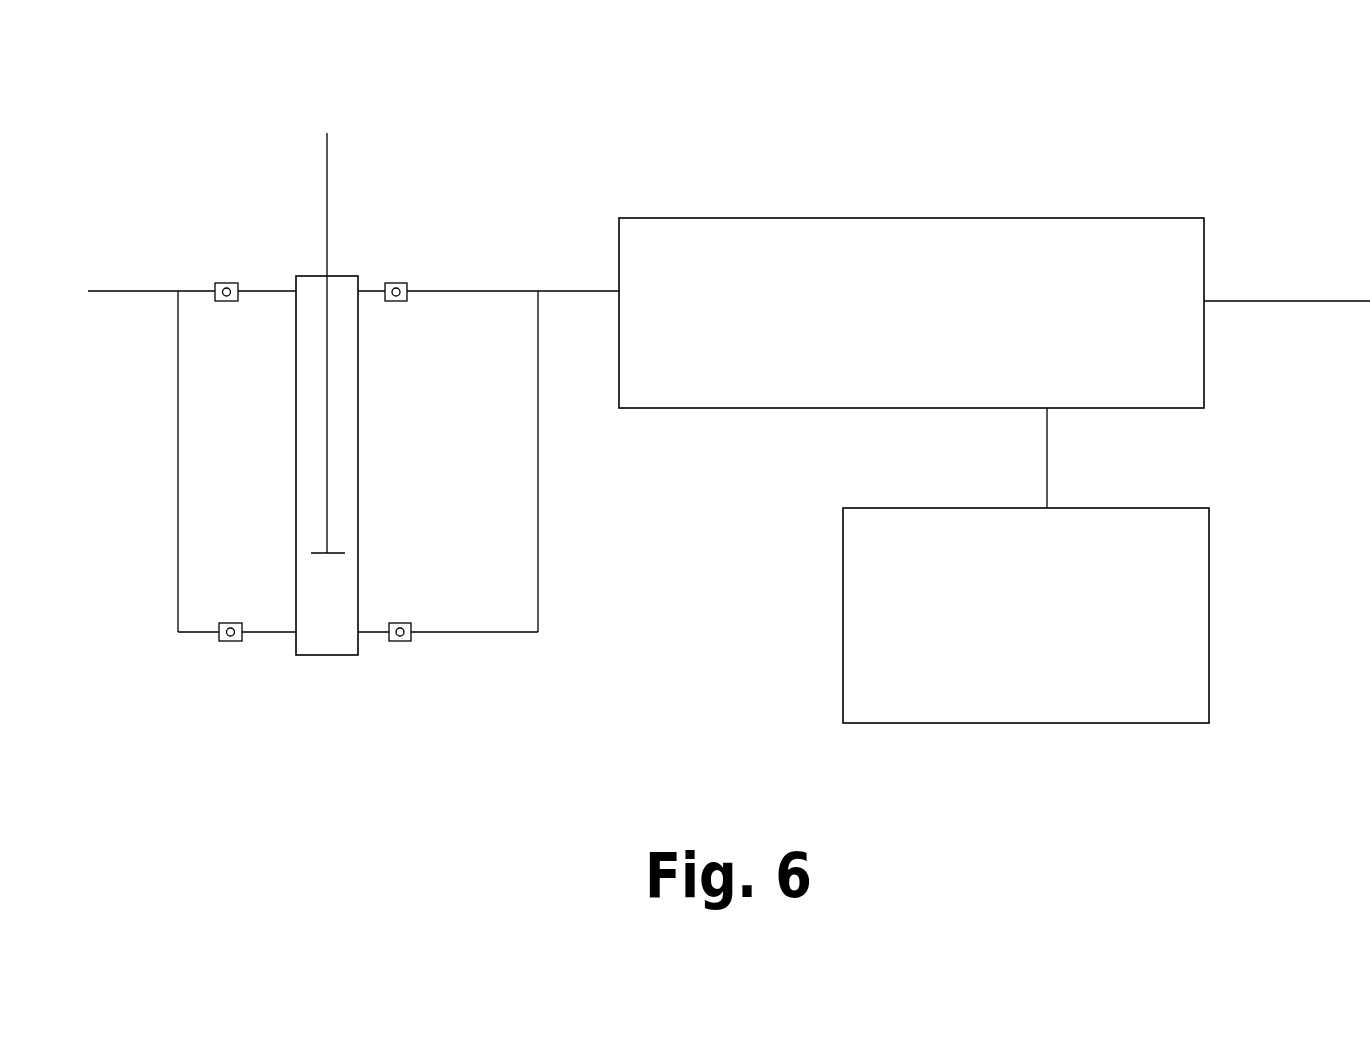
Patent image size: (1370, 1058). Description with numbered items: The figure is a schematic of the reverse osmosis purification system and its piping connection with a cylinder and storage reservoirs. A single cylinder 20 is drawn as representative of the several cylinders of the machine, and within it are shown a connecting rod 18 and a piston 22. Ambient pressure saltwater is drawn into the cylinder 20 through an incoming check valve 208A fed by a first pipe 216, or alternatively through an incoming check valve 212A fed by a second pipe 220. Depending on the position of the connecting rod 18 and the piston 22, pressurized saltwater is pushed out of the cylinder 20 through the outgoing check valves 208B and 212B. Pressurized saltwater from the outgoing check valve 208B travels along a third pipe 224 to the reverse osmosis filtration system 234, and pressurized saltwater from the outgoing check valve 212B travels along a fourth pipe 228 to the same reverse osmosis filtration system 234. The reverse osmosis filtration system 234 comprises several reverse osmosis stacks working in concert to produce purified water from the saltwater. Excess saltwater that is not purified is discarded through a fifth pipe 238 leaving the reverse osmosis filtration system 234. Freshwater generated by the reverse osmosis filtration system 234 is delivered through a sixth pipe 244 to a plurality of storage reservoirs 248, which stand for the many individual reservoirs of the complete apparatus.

The connecting rod 18 is at (327, 192).
The cylinder 20 is at (296, 480).
The piston 22 is at (330, 557).
The incoming check valve 208A is at (218, 283).
The outgoing check valve 208B is at (387, 283).
The incoming check valve 212A is at (240, 642).
The outgoing check valve 212B is at (393, 642).
The first pipe 216 is at (88, 293).
The second pipe 220 is at (178, 441).
The third pipe 224 is at (451, 293).
The fourth pipe 228 is at (538, 387).
The reverse osmosis filtration system 234 is at (871, 313).
The fifth pipe 238 is at (1290, 300).
The sixth pipe 244 is at (1045, 470).
The plurality of storage reservoirs 248 is at (1026, 615).